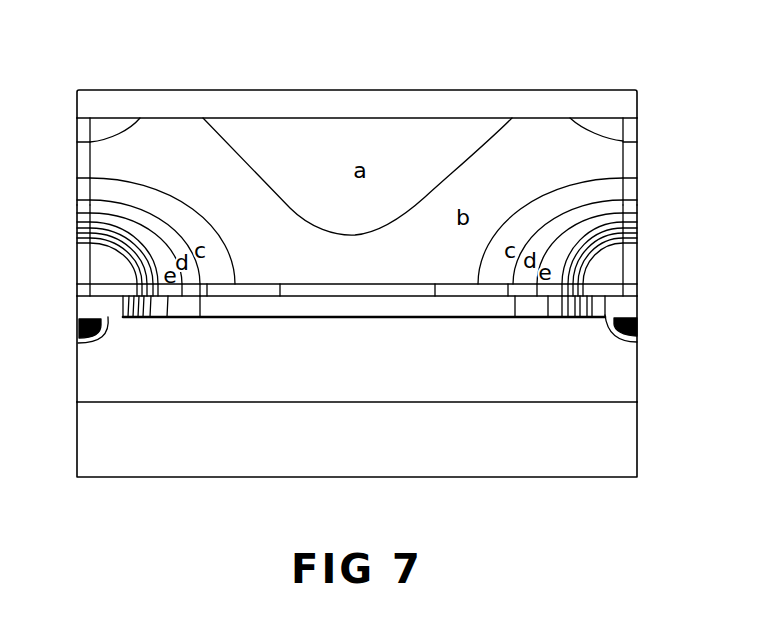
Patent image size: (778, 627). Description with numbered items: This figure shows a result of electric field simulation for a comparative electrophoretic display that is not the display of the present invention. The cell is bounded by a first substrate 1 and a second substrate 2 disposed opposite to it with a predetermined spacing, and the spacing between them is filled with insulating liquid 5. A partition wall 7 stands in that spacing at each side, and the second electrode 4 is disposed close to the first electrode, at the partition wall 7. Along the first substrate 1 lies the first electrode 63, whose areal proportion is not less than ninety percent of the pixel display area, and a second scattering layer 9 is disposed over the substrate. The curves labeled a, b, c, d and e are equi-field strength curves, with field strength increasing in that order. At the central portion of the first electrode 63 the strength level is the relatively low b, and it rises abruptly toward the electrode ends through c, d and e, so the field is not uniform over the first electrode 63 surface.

The first substrate 1 is at (623, 443).
The second substrate 2 is at (191, 100).
The second electrode 4 is at (78, 278).
The insulating liquid 5 is at (455, 135).
The partition wall 7 is at (80, 152).
The second scattering layer 9 is at (467, 395).
The first electrode 63 is at (340, 318).